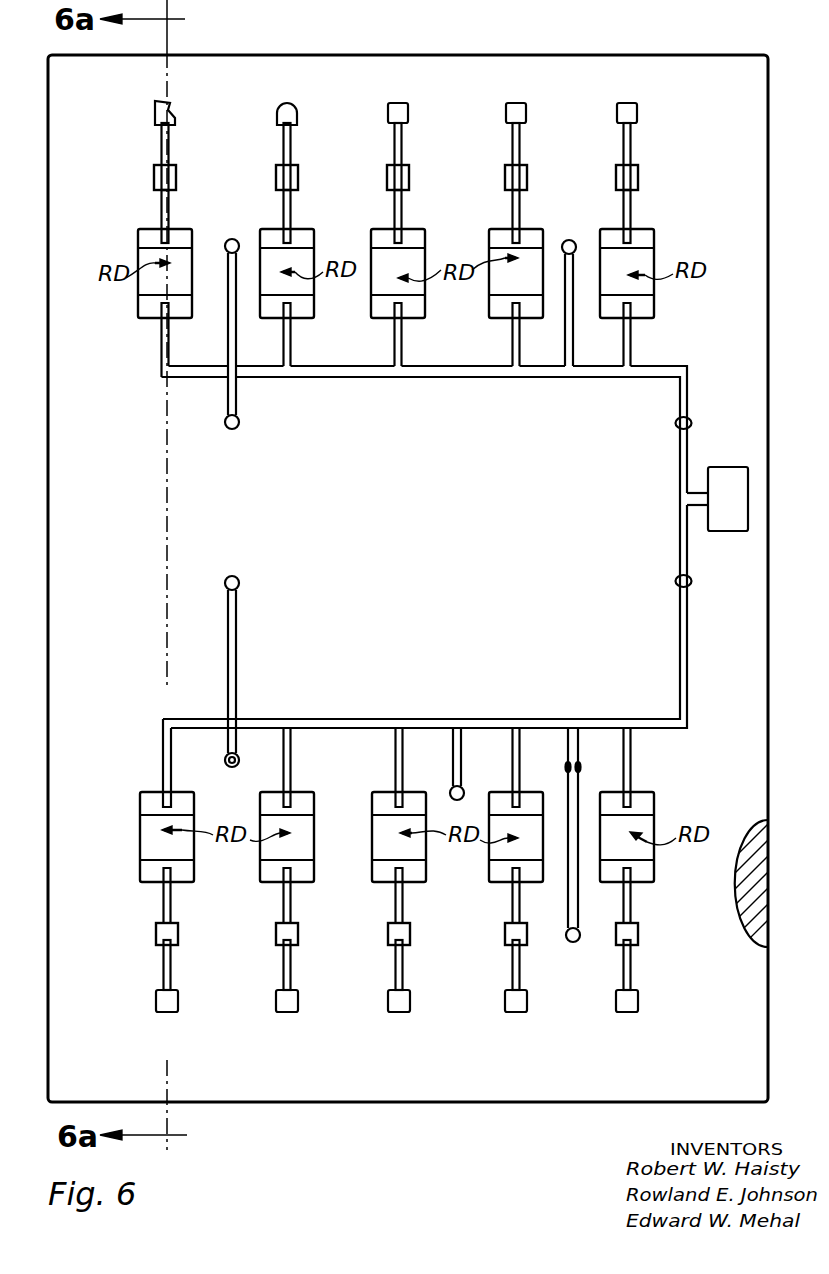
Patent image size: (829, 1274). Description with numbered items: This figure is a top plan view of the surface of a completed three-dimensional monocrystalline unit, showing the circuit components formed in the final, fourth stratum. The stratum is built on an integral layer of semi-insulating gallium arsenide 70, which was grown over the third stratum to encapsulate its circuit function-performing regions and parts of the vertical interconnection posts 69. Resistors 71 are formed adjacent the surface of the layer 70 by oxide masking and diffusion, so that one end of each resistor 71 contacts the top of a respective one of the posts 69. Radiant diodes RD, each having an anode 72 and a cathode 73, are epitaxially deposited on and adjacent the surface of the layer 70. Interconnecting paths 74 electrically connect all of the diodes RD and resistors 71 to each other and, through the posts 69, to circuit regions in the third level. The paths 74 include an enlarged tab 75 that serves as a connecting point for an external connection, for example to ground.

The vertical interconnection posts 69 is at (281, 108).
The semi-insulating gallium arsenide layer 70 is at (762, 888).
The resistors 71 is at (282, 142).
The anode 72 is at (153, 303).
The cathode 73 is at (152, 233).
The interconnecting paths 74 is at (169, 208).
The enlarged tab 75 is at (722, 480).